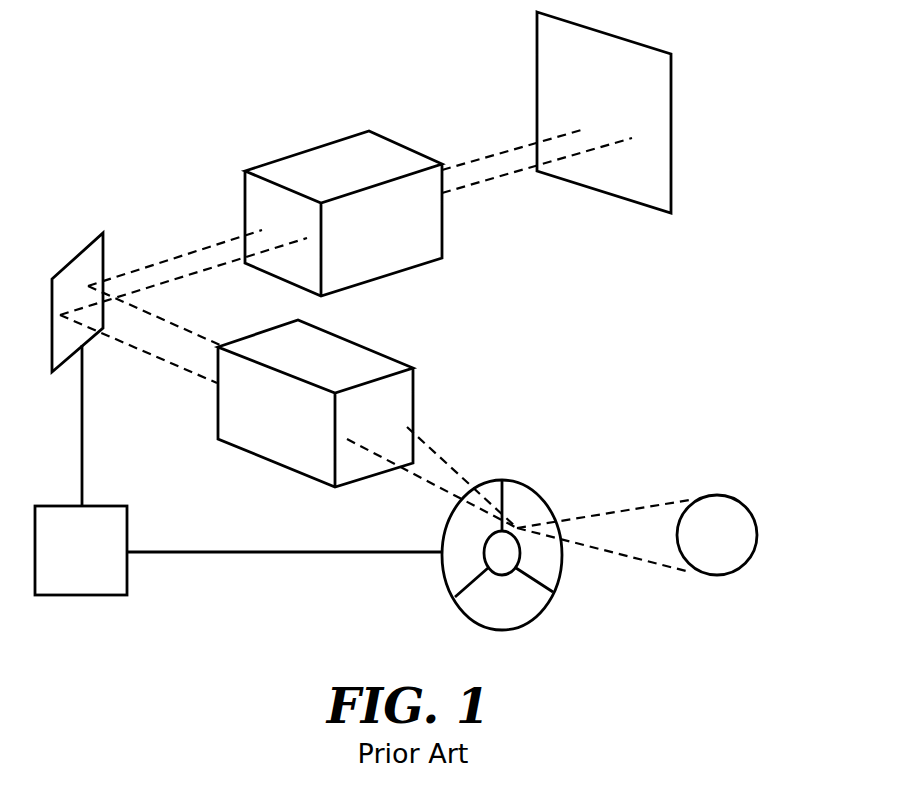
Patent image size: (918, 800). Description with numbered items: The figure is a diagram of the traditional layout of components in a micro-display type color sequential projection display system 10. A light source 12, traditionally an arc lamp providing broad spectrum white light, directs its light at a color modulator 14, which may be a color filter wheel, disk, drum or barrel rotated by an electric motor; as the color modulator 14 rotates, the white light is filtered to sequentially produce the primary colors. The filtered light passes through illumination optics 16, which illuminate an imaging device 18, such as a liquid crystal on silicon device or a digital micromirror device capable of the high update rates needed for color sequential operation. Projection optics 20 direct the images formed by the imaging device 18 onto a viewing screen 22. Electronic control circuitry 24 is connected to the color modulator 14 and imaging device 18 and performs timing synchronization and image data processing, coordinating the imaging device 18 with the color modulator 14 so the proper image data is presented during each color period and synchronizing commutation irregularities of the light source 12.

The projection display system 10 is at (145, 54).
The light source 12 is at (757, 515).
The color modulator 14 is at (537, 615).
The illumination optics 16 is at (380, 347).
The imaging device 18 is at (73, 258).
The projection optics 20 is at (316, 148).
The viewing screen 22 is at (671, 88).
The control circuitry 24 is at (82, 597).